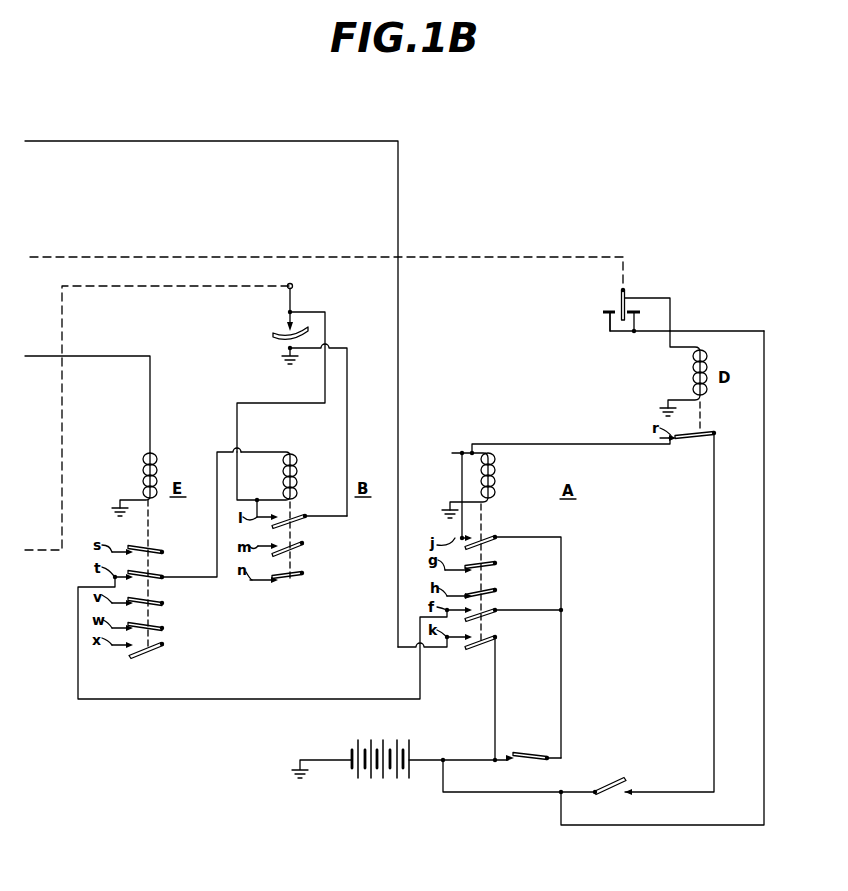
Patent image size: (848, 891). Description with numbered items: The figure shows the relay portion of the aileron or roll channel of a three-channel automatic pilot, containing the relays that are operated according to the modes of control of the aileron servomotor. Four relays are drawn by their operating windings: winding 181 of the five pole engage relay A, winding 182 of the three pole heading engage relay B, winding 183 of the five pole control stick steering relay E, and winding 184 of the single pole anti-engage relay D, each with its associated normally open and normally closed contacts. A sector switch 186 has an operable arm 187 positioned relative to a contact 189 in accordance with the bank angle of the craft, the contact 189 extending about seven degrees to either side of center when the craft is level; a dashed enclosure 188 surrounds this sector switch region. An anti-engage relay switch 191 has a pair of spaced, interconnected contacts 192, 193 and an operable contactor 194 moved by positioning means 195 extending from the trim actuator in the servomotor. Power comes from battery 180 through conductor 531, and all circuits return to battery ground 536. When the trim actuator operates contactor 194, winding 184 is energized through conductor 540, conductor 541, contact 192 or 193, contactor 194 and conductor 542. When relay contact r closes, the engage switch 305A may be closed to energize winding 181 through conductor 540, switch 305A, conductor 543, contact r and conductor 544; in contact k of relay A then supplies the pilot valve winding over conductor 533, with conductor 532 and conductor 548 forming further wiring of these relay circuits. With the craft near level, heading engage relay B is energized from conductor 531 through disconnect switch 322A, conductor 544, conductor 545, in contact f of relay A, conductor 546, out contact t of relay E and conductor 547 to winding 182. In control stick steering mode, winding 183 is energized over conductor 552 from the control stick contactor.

The battery 180 is at (368, 780).
The operating winding of engage relay A 181 is at (490, 493).
The operating winding of heading engage relay B 182 is at (286, 473).
The operating winding of control stick steering relay E 183 is at (145, 470).
The operating winding of anti-engage relay D 184 is at (694, 376).
The sector switch 186 is at (278, 318).
The operable arm 187 is at (290, 298).
The dashed enclosure 188 is at (117, 286).
The contact 189 is at (276, 334).
The anti-engage relay switch 191 is at (640, 283).
The contact 192 is at (603, 312).
The contact 193 is at (658, 313).
The operable contactor 194 is at (621, 303).
The positioning means 195 is at (623, 256).
The conductor 531 is at (437, 758).
The conductor 532 is at (496, 680).
The conductor 533 is at (421, 649).
The battery ground 536 is at (334, 758).
The conductor 540 is at (495, 793).
The conductor 541 is at (764, 762).
The conductor 542 is at (670, 310).
The conductor 543 is at (713, 650).
The conductor 544 is at (535, 444).
The conductor 545 is at (548, 610).
The conductor 546 is at (418, 698).
The conductor 547 is at (183, 578).
The conductor 548 is at (237, 433).
The conductor 552 is at (150, 373).
The disconnect switch 322A is at (532, 761).
The engage switch 305A is at (618, 796).